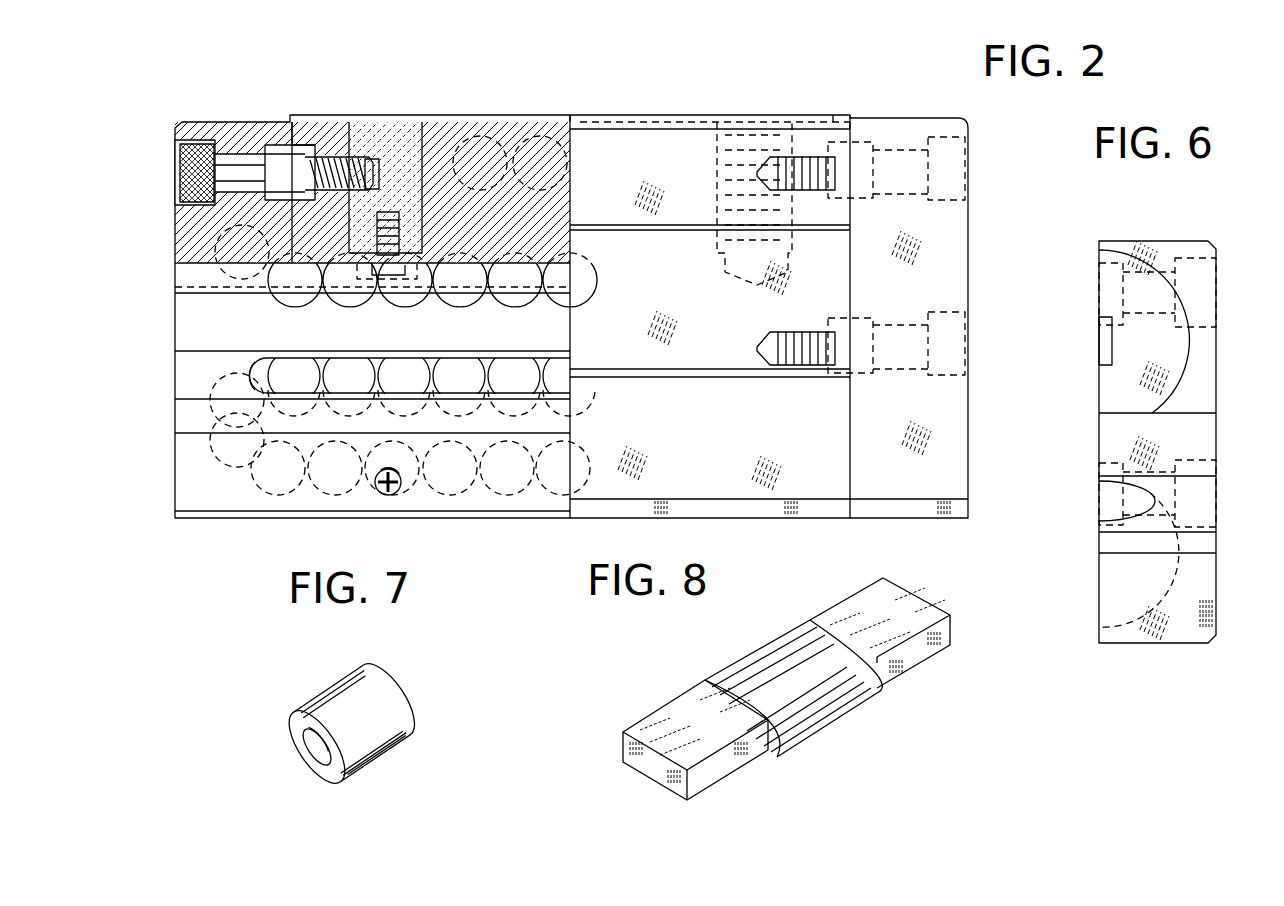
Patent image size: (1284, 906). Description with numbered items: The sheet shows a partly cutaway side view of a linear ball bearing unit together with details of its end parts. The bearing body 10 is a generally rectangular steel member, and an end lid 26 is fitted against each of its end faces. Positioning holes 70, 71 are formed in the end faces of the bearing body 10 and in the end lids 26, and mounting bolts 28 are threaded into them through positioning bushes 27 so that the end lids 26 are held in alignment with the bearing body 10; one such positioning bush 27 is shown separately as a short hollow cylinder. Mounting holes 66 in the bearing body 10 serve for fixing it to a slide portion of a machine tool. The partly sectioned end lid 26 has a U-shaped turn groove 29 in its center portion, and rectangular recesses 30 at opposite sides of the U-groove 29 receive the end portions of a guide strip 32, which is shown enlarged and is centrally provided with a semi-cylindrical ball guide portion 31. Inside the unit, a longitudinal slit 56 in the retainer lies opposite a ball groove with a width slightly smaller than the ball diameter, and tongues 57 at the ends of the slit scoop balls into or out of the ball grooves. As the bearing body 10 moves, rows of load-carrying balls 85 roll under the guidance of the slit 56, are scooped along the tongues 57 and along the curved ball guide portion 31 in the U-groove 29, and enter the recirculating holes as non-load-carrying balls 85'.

In FIG. 2, the bearing body 10 is at (627, 108).
In FIG. 2, the end lid 26 is at (222, 122).
In FIG. 6, the end lid 26 is at (1160, 241).
In FIG. 2, the positioning bush 27 is at (270, 128).
In FIG. 7, the positioning bush 27 is at (345, 695).
In FIG. 2, the mounting bolt 28 is at (176, 165).
In FIG. 6, the U-shaped turn groove 29 is at (1186, 343).
In FIG. 6, the rectangular recess 30 is at (1104, 340).
In FIG. 8, the semi-cylindrical ball guide portion 31 is at (780, 655).
In FIG. 8, the guide strip 32 is at (868, 600).
In FIG. 2, the longitudinal slit 56 is at (433, 365).
In FIG. 2, the tongue 57 is at (243, 301).
In FIG. 2, the mounting hole 66 is at (779, 132).
In FIG. 2, the positioning hole 70 is at (306, 125).
In FIG. 2, the positioning hole 71 is at (858, 148).
In FIG. 2, the load-carrying ball 85 is at (431, 361).
In FIG. 2, the non-load-carrying ball 85' is at (420, 498).